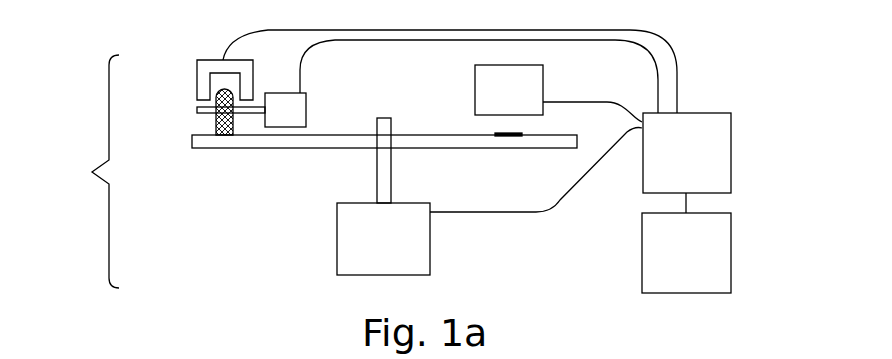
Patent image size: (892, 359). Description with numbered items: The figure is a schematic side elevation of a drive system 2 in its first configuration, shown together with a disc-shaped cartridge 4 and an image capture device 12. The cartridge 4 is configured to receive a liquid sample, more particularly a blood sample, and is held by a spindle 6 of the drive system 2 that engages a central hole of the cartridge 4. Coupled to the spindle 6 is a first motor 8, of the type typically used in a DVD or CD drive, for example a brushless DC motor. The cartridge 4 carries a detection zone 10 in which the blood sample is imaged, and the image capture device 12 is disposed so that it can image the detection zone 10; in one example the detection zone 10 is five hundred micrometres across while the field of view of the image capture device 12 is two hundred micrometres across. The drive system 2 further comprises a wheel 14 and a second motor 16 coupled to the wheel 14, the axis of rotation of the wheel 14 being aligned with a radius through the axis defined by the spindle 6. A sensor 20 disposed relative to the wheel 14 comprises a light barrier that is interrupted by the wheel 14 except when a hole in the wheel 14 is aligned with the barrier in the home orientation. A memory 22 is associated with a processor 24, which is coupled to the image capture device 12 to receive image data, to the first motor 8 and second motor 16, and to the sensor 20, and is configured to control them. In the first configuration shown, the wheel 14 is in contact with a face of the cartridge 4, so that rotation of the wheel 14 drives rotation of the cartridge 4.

The drive system 2 is at (95, 171).
The cartridge 4 is at (467, 149).
The spindle 6 is at (391, 179).
The first motor 8 is at (430, 248).
The detection zone 10 is at (503, 134).
The image capture device 12 is at (543, 83).
The wheel 14 is at (231, 120).
The second motor 16 is at (307, 114).
The sensor 20 is at (210, 60).
The memory 22 is at (732, 251).
The processor 24 is at (715, 112).